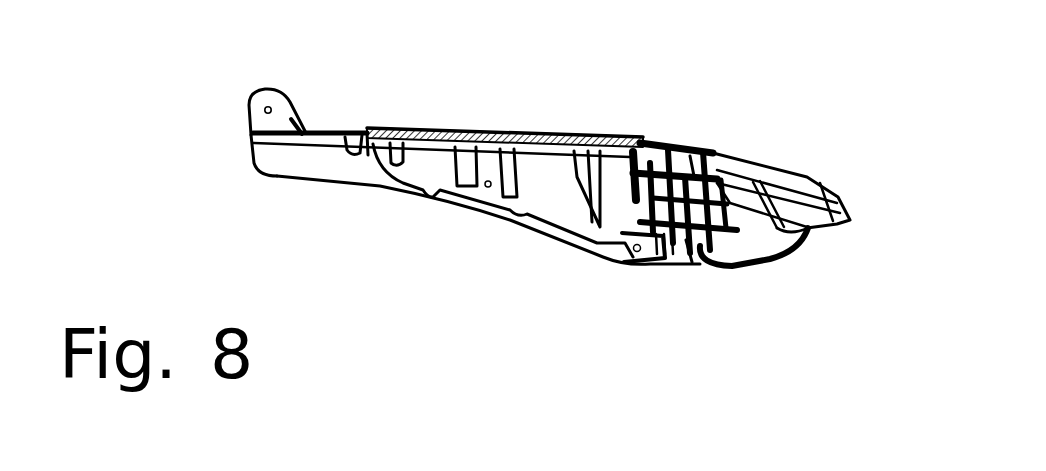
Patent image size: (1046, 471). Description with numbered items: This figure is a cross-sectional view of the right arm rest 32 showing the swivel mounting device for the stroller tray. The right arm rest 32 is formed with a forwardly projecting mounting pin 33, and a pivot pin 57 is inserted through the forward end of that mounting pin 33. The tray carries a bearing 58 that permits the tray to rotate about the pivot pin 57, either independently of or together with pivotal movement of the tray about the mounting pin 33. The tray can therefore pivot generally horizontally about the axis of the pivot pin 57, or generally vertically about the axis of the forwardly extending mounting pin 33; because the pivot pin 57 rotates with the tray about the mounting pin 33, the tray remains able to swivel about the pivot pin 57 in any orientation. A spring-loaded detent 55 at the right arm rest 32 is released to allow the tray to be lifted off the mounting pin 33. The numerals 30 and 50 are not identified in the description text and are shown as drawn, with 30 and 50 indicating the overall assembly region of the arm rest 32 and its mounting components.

The housing 30 is at (805, 168).
The arm rest 32 is at (266, 158).
The mounting pin 33 is at (679, 146).
The bracket assembly 50 is at (727, 315).
The spring-loaded detent 55 is at (691, 150).
The pivot pin 57 is at (690, 262).
The bearing 58 is at (807, 224).